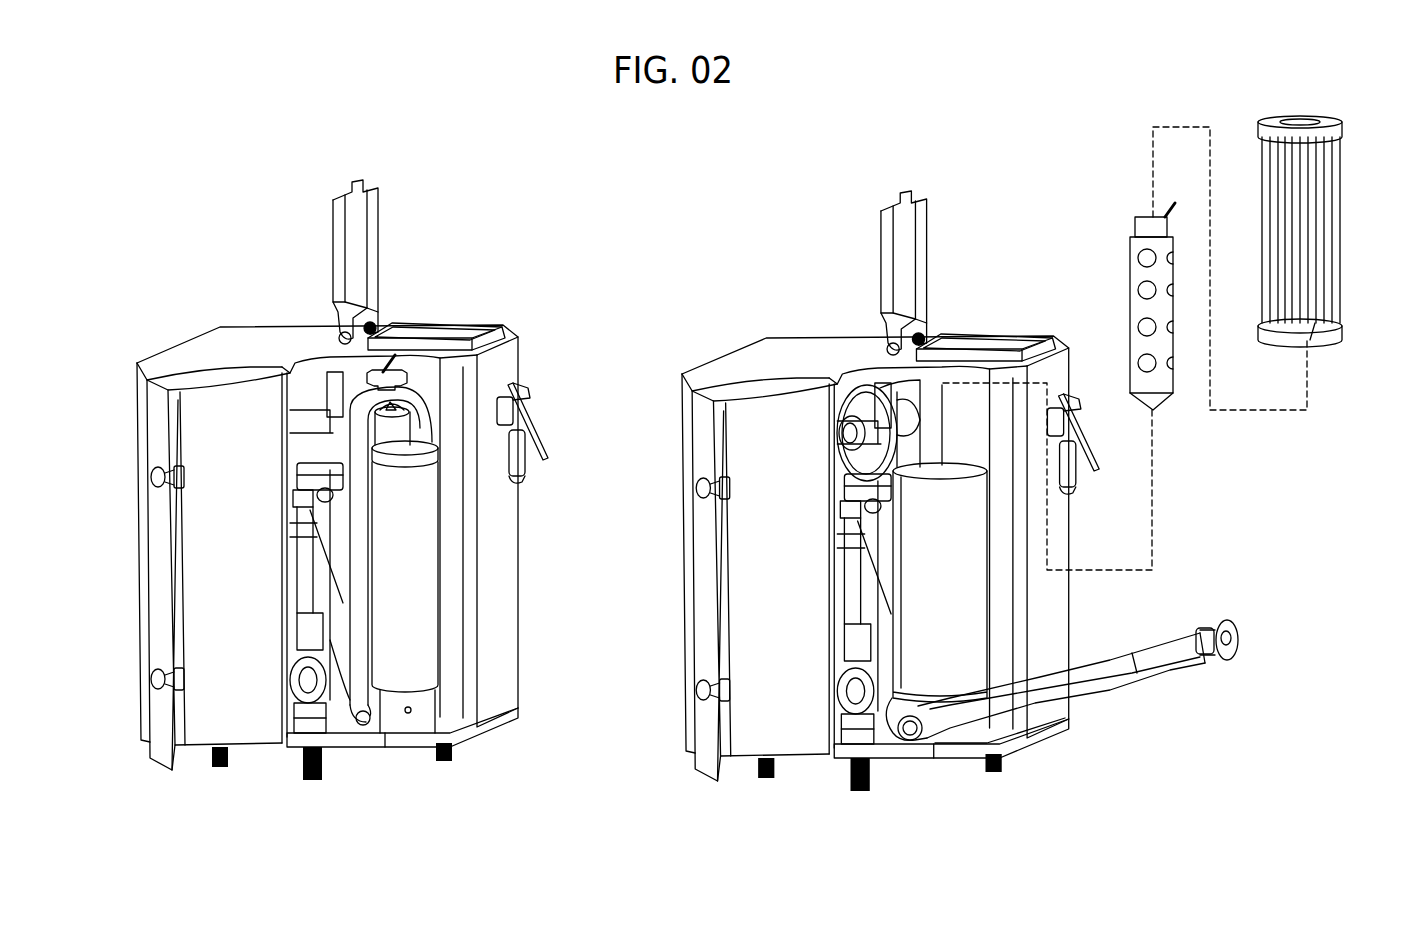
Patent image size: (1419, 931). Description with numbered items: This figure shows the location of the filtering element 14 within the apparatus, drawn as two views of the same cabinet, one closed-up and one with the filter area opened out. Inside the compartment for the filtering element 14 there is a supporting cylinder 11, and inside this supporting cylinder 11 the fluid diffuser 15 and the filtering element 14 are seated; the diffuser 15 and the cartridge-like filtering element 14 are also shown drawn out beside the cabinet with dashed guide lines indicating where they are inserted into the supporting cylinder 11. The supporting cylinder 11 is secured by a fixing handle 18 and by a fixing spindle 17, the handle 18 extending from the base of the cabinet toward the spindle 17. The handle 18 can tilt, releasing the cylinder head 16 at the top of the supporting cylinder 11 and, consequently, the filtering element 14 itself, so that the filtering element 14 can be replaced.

The supporting cylinder 11 is at (960, 643).
The filtering element 14 is at (1347, 180).
The fluid diffuser 15 is at (1127, 205).
The cylinder head 16 is at (837, 383).
The fixing spindle 17 is at (1238, 620).
The fixing handle 18 is at (1130, 690).